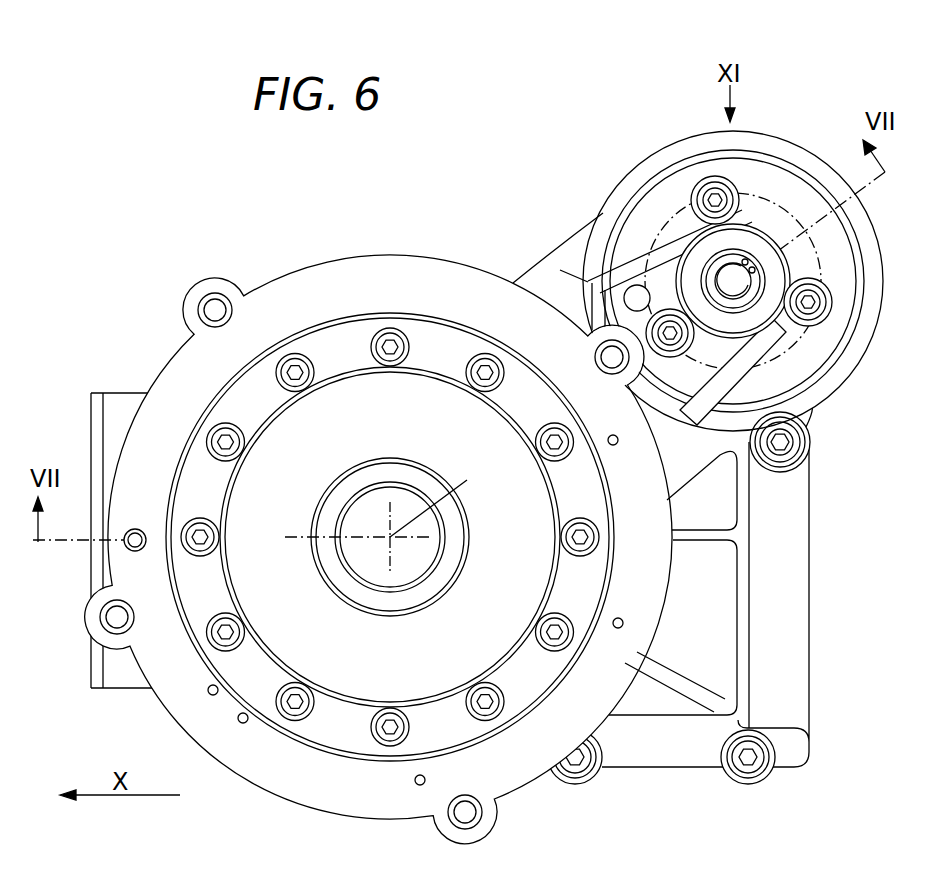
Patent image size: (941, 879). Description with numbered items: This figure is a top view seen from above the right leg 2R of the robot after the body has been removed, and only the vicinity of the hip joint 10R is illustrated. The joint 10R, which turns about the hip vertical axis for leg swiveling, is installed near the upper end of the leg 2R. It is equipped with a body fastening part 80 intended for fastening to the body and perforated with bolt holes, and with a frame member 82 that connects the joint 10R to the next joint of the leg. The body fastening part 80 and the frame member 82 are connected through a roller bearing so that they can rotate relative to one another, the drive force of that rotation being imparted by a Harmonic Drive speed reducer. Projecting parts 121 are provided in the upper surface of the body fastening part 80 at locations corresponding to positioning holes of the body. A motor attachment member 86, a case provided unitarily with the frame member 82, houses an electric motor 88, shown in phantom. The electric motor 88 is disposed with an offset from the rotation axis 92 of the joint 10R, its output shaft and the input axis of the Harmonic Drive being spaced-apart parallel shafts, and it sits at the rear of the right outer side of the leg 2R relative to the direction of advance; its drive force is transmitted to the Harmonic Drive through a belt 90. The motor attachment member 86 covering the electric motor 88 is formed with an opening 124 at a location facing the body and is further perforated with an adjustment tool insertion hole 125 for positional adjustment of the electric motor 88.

The leg 2R is at (226, 236).
The joint 10R is at (417, 237).
The body fastening part 80 is at (347, 270).
The frame member 82 is at (125, 403).
The motor attachment member 86 is at (662, 158).
The electric motor 88 is at (783, 207).
The belt 90 is at (670, 333).
The rotation axis 92 is at (390, 537).
The projecting parts 121 is at (132, 528).
The opening 124 is at (700, 160).
The adjustment tool insertion hole 125 is at (637, 298).